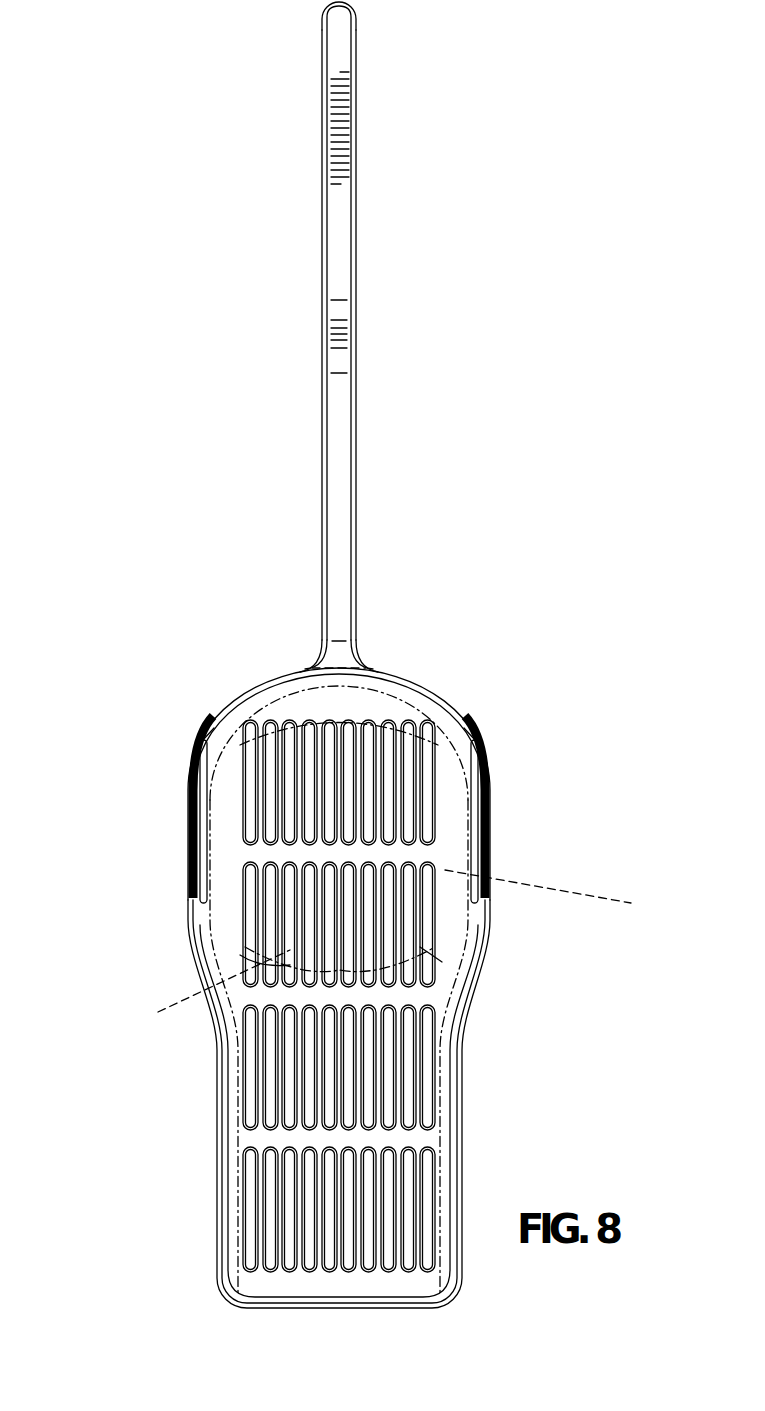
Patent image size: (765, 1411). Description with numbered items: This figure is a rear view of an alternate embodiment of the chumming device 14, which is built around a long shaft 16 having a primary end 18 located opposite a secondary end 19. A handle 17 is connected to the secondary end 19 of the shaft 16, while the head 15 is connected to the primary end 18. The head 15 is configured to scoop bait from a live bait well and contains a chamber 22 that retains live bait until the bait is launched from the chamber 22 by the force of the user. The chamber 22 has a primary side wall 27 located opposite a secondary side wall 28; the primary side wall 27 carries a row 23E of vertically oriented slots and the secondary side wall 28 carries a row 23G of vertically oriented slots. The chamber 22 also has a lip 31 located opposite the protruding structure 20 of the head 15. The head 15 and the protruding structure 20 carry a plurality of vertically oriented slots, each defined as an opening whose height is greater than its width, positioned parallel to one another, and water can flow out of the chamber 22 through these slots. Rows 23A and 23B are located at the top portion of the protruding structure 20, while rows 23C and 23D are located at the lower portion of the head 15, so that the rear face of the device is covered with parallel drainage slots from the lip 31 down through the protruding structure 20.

The chumming device 14 is at (143, 595).
The head 15 is at (190, 925).
The shaft 16 is at (324, 300).
The handle 17 is at (327, 107).
The primary end 18 is at (325, 645).
The secondary end 19 is at (327, 60).
The protruding structure 20 is at (230, 1202).
The chamber 22 is at (553, 894).
The row of vertically oriented slots 23A is at (428, 1180).
The row of vertically oriented slots 23B is at (427, 1057).
The row of vertically oriented slots 23C is at (425, 943).
The row of vertically oriented slots 23D is at (428, 775).
The row of vertically oriented slots 23E is at (205, 858).
The row of vertically oriented slots 23G is at (478, 848).
The primary side wall 27 is at (188, 825).
The secondary side wall 28 is at (490, 815).
The lip 31 is at (287, 987).